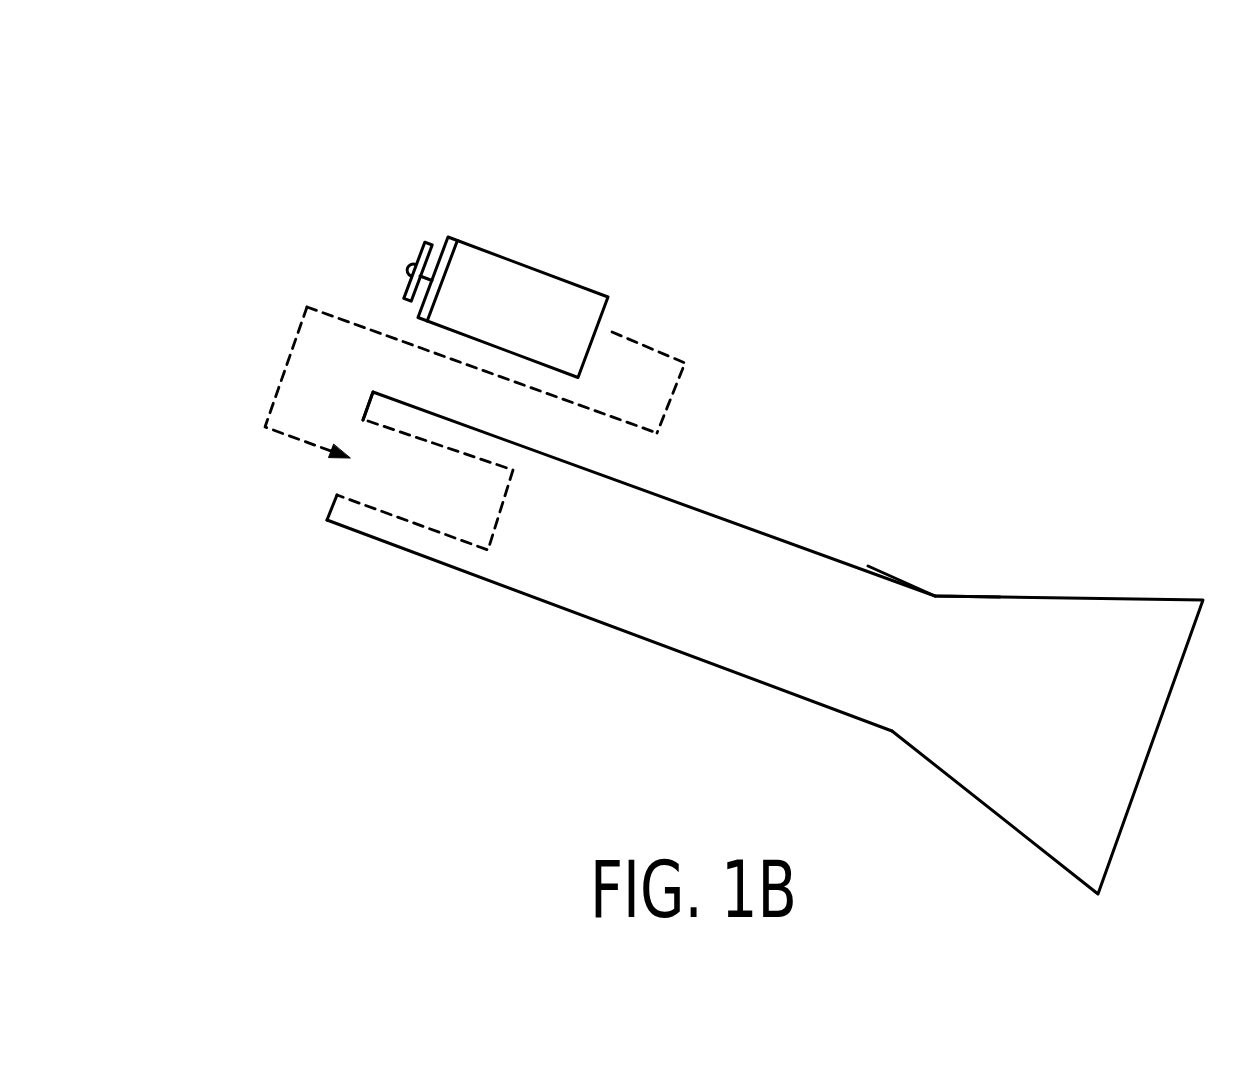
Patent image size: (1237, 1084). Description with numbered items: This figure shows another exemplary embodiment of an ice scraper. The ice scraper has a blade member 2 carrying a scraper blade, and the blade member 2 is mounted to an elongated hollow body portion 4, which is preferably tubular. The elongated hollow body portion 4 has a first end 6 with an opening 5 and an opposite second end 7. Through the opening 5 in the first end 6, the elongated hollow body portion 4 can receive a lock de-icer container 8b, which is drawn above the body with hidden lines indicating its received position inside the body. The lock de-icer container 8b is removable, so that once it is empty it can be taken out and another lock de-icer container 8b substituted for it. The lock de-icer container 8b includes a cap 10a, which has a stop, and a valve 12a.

The blade member 2 is at (1047, 745).
The elongated hollow body portion 4 is at (631, 561).
The opening 5 is at (425, 485).
The first end 6 is at (327, 517).
The second end 7 is at (868, 566).
The lock de-icer container 8b is at (523, 307).
The cap 10a is at (427, 242).
The valve 12a is at (407, 267).